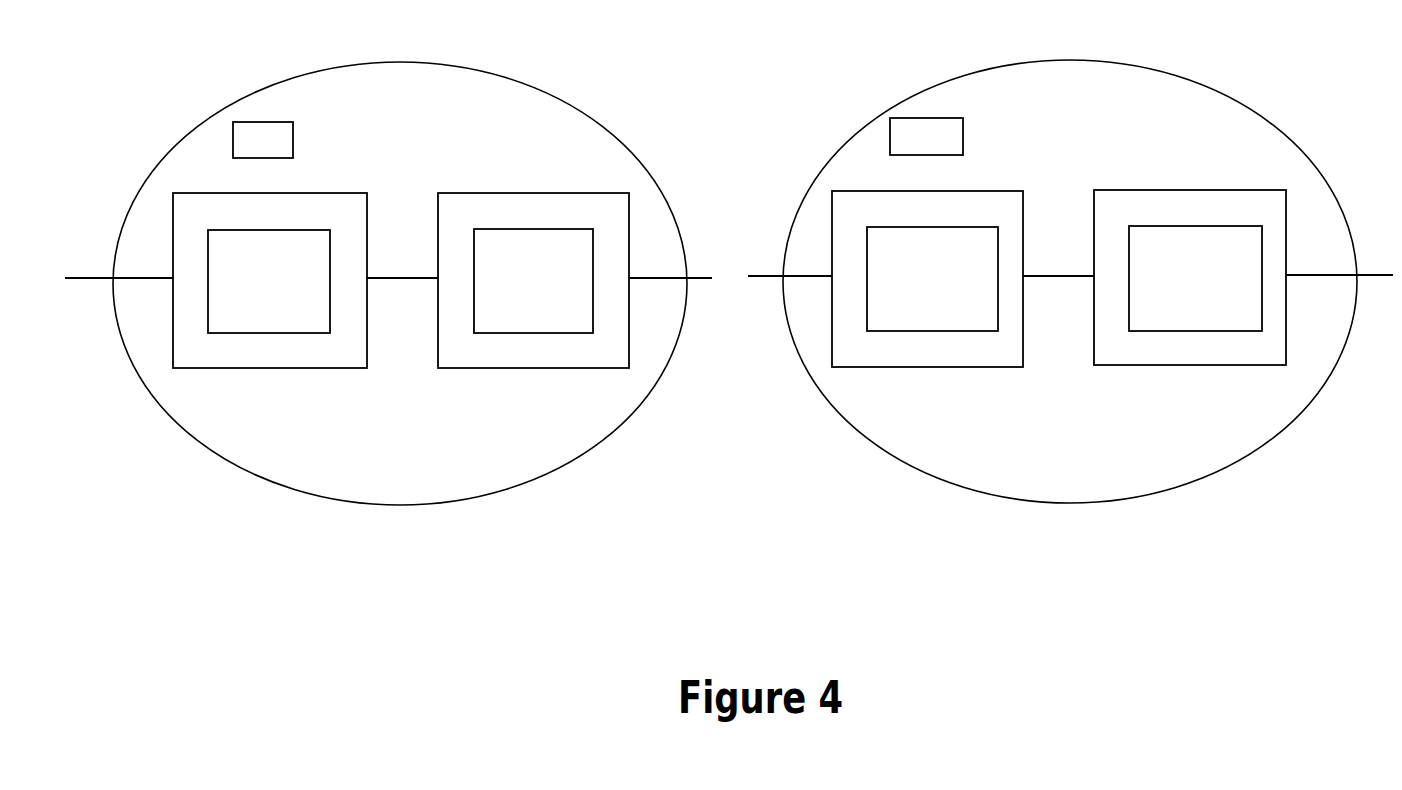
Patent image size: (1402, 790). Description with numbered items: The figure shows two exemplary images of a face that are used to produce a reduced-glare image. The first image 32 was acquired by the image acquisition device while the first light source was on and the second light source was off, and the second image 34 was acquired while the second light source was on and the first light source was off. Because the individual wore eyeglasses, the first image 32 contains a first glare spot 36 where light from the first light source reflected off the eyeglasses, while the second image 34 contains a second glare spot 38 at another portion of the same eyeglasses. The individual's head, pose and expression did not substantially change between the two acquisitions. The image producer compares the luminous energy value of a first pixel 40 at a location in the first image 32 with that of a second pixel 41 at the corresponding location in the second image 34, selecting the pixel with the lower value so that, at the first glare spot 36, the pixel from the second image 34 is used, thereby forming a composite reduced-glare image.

The first image 32 is at (270, 483).
The second image 34 is at (1263, 443).
The first glare spot 36 is at (547, 307).
The second glare spot 38 is at (938, 307).
The first pixel 40 is at (293, 152).
The second pixel 41 is at (963, 152).